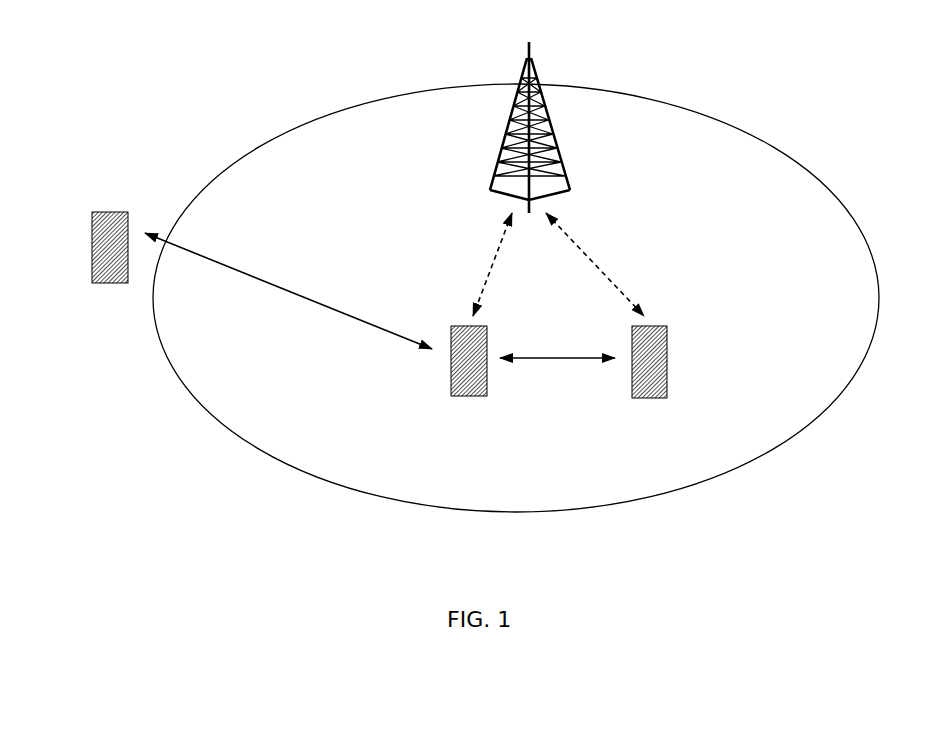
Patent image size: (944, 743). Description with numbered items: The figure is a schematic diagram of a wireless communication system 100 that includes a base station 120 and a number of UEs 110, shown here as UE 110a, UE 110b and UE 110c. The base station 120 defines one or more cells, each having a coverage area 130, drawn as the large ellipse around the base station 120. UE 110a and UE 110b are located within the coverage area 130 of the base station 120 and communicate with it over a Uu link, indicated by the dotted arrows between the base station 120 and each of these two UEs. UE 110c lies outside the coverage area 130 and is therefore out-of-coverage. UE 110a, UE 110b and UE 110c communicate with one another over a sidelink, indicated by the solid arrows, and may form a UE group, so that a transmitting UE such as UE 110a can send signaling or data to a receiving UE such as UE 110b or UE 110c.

The wireless communication system 100 is at (736, 98).
The UE 110 is at (698, 350).
The UE 110a is at (462, 405).
The UE 110b is at (650, 406).
The UE 110c is at (117, 292).
The base station 120 is at (492, 161).
The coverage area 130 is at (243, 142).